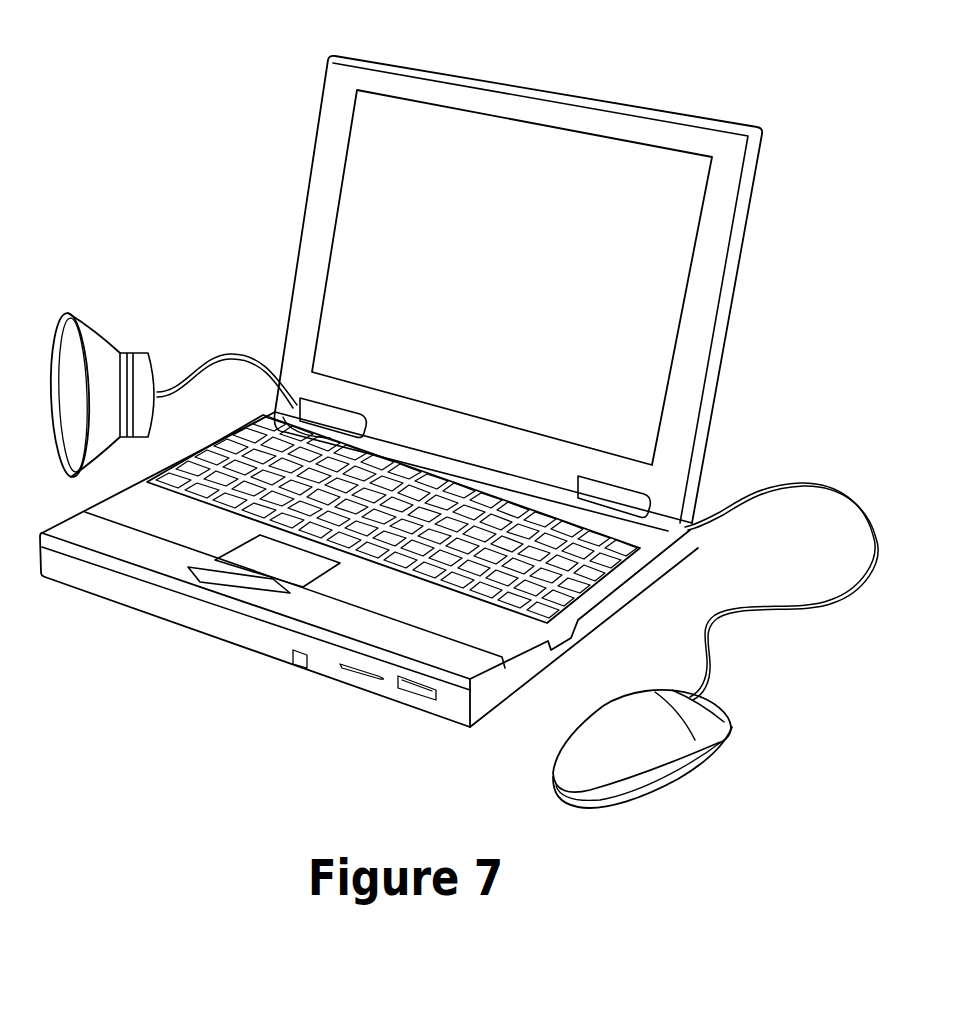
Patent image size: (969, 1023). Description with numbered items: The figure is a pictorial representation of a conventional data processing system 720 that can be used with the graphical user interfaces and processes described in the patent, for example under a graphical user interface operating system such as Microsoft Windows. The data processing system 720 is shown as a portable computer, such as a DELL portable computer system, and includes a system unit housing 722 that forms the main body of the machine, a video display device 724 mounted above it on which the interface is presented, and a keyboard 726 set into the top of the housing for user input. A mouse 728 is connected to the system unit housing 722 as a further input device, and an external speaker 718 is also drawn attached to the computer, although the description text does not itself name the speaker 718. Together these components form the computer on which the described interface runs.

The speaker 718 is at (68, 313).
The data processing system 720 is at (434, 407).
The system unit housing 722 is at (647, 518).
The video display device 724 is at (623, 172).
The keyboard 726 is at (297, 495).
The mouse 728 is at (667, 760).